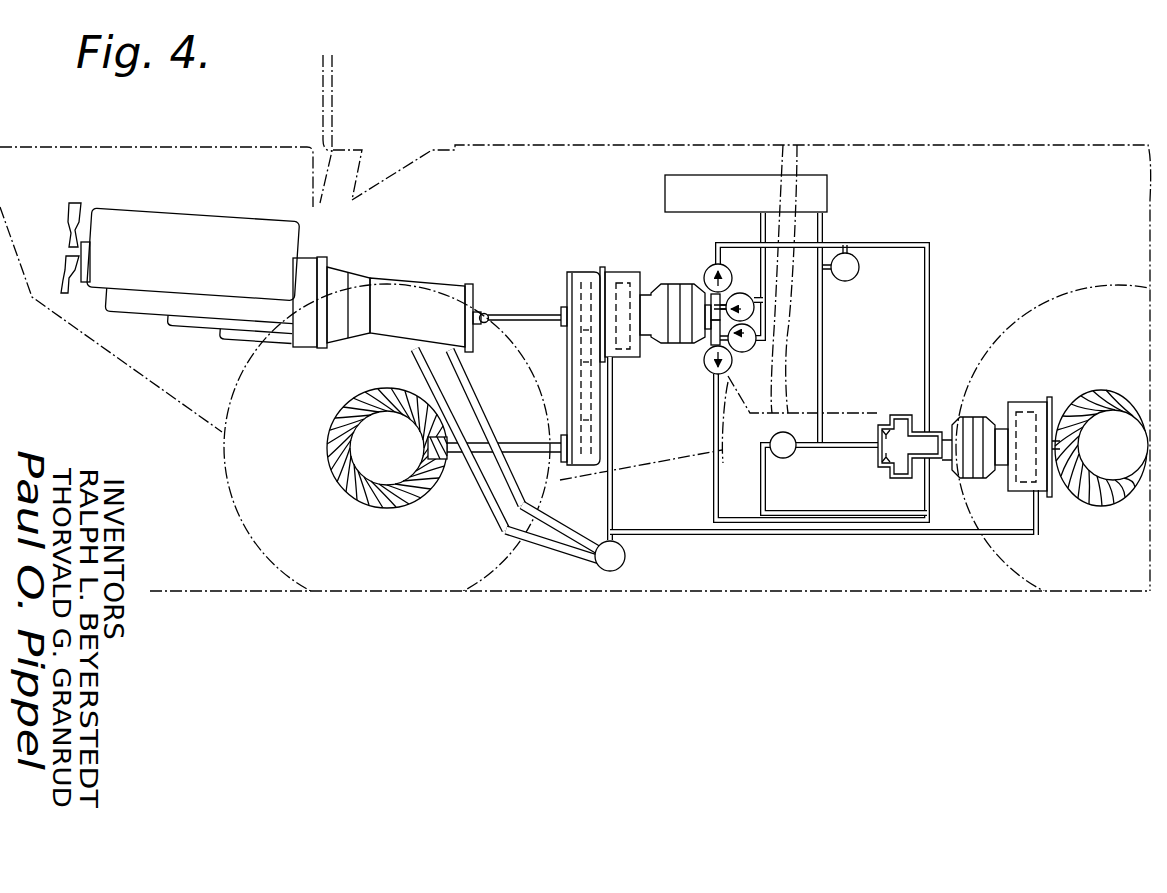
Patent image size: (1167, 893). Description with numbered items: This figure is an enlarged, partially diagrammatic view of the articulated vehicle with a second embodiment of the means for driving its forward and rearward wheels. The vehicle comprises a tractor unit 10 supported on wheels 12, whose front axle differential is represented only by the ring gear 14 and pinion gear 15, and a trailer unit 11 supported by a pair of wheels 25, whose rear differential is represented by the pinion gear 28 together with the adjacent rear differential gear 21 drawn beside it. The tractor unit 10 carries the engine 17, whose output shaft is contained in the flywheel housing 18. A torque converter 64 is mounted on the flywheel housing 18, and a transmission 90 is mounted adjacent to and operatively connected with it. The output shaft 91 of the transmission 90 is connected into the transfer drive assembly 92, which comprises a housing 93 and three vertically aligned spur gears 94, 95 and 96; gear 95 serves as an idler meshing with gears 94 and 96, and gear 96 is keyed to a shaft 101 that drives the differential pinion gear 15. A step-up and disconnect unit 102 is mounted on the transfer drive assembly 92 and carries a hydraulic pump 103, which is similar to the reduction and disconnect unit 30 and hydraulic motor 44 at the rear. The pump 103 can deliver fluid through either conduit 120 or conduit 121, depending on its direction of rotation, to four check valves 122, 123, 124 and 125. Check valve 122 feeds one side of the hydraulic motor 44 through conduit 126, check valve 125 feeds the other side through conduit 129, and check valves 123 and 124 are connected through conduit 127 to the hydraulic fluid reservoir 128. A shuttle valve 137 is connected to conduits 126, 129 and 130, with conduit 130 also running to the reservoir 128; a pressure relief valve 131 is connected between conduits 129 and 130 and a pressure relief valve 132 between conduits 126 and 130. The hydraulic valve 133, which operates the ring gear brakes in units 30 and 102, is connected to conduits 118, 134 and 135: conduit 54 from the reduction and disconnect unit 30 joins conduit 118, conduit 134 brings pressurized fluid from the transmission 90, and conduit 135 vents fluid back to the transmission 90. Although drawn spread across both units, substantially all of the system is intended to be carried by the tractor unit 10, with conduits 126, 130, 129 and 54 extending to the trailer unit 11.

The tractor portion or unit 10 is at (203, 145).
The trailer portion or unit 11 is at (962, 145).
The wheels 12 is at (232, 496).
The ring gear 14 is at (362, 492).
The pinion gear 15 is at (440, 470).
The engine 17 is at (210, 262).
The flywheel housing 18 is at (318, 257).
The rear drive bevel gear 21 is at (1083, 398).
The wheels 25 is at (1002, 566).
The pinion gear 28 is at (1113, 445).
The reduction and disconnect unit 30 is at (1032, 400).
The hydraulic motor 44 is at (970, 478).
The conduit 54 is at (1018, 541).
The torque converter 64 is at (343, 268).
The transmission 90 is at (436, 282).
The output shaft 91 is at (518, 310).
The transfer drive unit or assembly 92 is at (580, 270).
The housing 93 is at (594, 274).
The spur gear 94 is at (578, 336).
The spur gear 95 is at (578, 364).
The spur gear 96 is at (576, 427).
The shaft 101 is at (520, 440).
The step-up and disconnect unit 102 is at (621, 272).
The hydraulic pump 103 is at (665, 283).
The conduit 118 is at (618, 440).
The conduit 120 is at (704, 340).
The conduit 121 is at (702, 294).
The check valve 122 is at (726, 276).
The check valve 123 is at (755, 302).
The check valve 124 is at (757, 336).
The check valve 125 is at (707, 372).
The conduit 126 is at (890, 243).
The conduit 127 is at (755, 216).
The hydraulic fluid reservoir 128 is at (750, 203).
The conduit 129 is at (805, 514).
The conduit 130 is at (825, 378).
The pressure relief valve 131 is at (790, 458).
The pressure relief valve 132 is at (858, 276).
The hydraulic valve 133 is at (626, 556).
The conduit 134 is at (480, 406).
The conduit 135 is at (492, 512).
The shuttle valve 137 is at (877, 437).